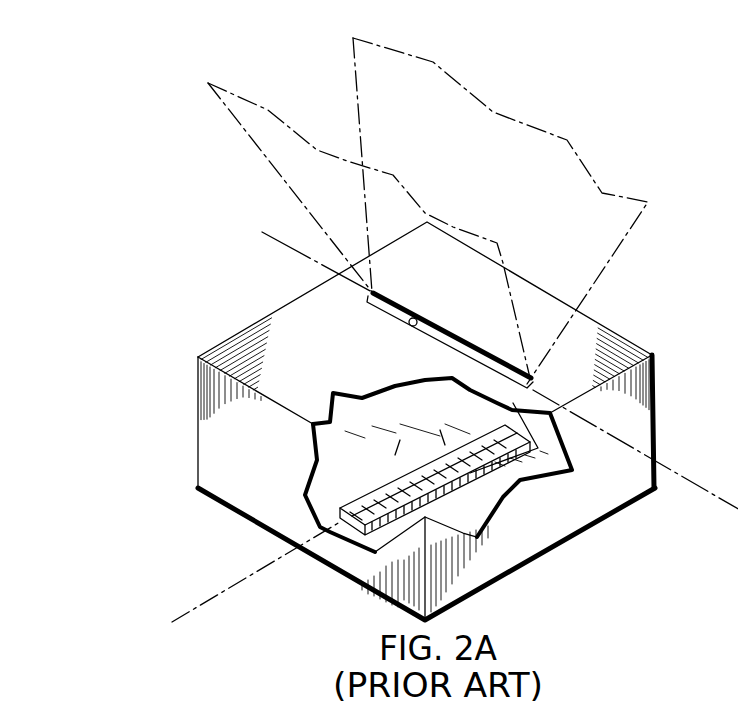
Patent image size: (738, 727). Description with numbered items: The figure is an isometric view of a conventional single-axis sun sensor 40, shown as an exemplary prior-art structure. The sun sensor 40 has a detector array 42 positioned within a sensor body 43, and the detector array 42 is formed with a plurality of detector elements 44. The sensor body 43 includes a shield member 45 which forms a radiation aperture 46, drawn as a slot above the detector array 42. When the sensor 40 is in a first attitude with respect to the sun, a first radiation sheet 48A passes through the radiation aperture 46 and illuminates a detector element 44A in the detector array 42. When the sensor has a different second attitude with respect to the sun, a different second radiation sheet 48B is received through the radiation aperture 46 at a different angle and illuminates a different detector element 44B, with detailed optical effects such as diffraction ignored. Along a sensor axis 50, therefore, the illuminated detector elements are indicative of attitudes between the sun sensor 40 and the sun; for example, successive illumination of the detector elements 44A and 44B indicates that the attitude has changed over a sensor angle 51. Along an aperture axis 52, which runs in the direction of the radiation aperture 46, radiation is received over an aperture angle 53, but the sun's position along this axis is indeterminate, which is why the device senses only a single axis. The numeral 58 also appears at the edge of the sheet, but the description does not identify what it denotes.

The sun sensor structure 40 is at (245, 325).
The detector array 42 is at (385, 480).
The sensor body 43 is at (222, 400).
The detector elements 44 is at (361, 502).
The detector element 44A is at (427, 456).
The detector element 44B is at (546, 433).
The shield member 45 is at (281, 330).
The radiation aperture 46 is at (414, 318).
The first radiation sheet 48A is at (617, 253).
The second radiation sheet 48B is at (513, 305).
The sensor axis 50 is at (256, 572).
The sensor angle 51 is at (613, 250).
The aperture axis 52 is at (635, 450).
The aperture angle 53 is at (357, 80).
The document 58 is at (728, 95).